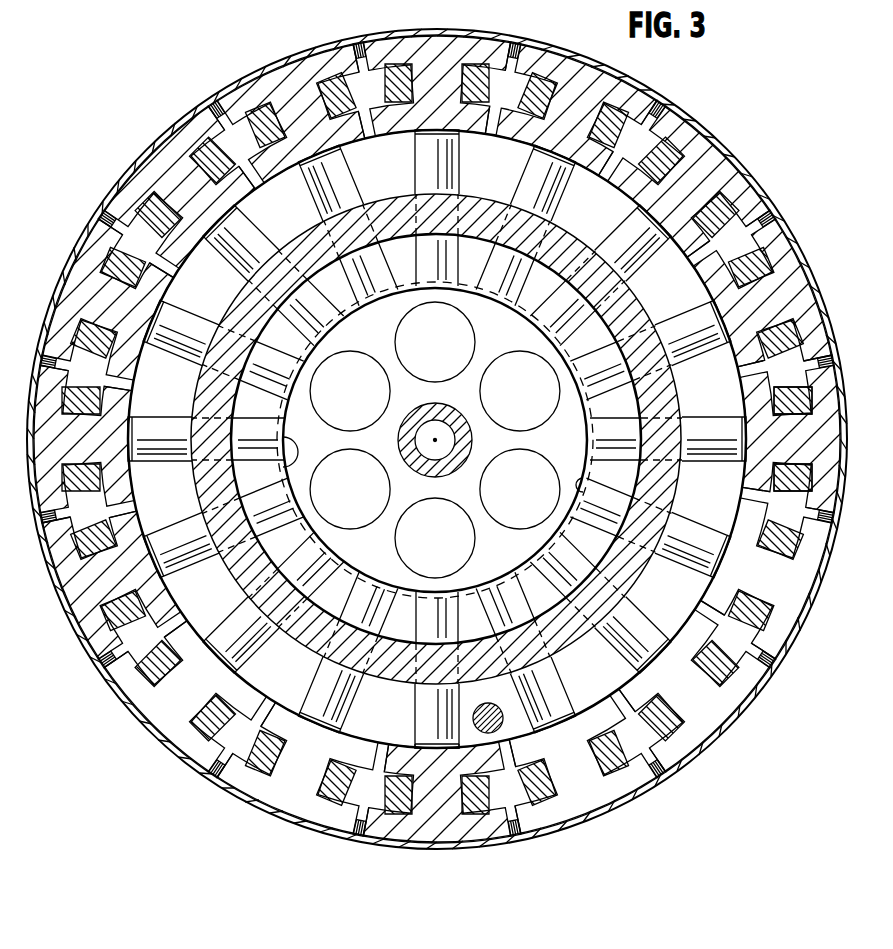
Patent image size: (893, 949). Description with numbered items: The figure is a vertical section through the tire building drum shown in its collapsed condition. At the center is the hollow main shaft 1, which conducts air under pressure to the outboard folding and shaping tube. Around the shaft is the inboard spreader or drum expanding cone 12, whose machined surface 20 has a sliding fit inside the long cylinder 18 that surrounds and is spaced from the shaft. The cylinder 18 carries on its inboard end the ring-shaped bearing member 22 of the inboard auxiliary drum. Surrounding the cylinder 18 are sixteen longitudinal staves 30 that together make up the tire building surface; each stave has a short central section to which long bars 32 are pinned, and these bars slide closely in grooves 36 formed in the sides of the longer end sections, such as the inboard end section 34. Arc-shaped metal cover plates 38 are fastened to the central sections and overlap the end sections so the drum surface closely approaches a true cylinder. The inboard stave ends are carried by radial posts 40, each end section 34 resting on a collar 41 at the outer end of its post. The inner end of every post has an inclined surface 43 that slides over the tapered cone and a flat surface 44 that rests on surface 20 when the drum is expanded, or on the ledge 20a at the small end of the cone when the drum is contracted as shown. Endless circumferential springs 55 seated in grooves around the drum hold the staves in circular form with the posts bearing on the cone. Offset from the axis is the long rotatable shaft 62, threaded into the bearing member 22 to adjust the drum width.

The main shaft 1 is at (462, 443).
The inboard spreader or drum expanding cone 12 is at (580, 416).
The long cylinder 18 is at (328, 654).
The machined surface 20 is at (637, 577).
The ledge 20a is at (483, 293).
The ring-shaped bearing member 22 is at (733, 507).
The longitudinal slats or staves 30 is at (715, 142).
The long fingers or bars 32 is at (546, 87).
The inboard end section 34 is at (790, 248).
The grooves 36 is at (753, 275).
The long metal cover plates 38 is at (450, 33).
The posts 40 is at (187, 340).
The collar 41 is at (419, 735).
The inclined surface 43 is at (337, 328).
The flat surface 44 is at (284, 438).
The endless circumferential springs 55 is at (658, 782).
The long rotatable shaft 62 is at (505, 712).